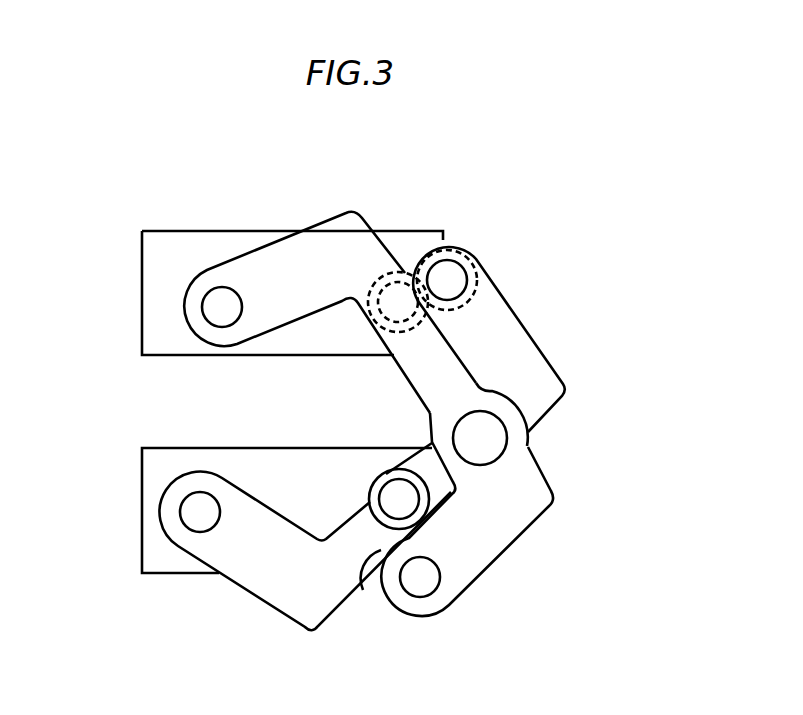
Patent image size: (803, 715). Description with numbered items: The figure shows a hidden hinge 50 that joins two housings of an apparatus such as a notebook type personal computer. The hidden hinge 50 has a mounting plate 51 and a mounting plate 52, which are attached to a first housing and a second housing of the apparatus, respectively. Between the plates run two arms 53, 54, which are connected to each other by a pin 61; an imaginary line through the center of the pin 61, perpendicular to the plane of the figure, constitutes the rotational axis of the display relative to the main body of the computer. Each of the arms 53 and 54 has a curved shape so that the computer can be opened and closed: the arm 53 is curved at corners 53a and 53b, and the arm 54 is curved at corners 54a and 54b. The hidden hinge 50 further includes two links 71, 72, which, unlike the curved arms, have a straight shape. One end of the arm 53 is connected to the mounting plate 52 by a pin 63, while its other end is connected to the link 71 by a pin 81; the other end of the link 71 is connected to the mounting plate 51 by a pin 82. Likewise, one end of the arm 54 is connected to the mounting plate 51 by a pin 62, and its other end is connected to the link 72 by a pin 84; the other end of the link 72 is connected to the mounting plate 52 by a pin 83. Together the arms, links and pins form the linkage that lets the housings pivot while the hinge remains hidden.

The hidden hinge 50 is at (530, 167).
The mounting plate 51 is at (142, 297).
The mounting plate 52 is at (142, 511).
The arm 53 is at (409, 473).
The corner 53a is at (556, 392).
The corner 53b is at (312, 630).
The arm 54 is at (413, 383).
The corner 54a is at (546, 494).
The corner 54b is at (343, 228).
The pin 61 is at (490, 442).
The pin 62 is at (222, 300).
The pin 63 is at (202, 518).
The link 71 is at (455, 250).
The link 72 is at (363, 590).
The pin 81 is at (452, 280).
The pin 82 is at (398, 300).
The pin 83 is at (394, 496).
The pin 84 is at (420, 585).